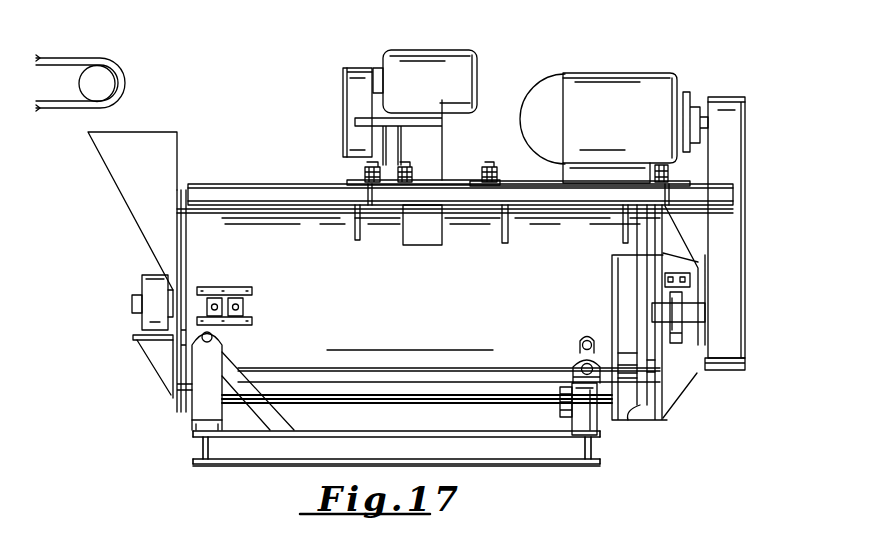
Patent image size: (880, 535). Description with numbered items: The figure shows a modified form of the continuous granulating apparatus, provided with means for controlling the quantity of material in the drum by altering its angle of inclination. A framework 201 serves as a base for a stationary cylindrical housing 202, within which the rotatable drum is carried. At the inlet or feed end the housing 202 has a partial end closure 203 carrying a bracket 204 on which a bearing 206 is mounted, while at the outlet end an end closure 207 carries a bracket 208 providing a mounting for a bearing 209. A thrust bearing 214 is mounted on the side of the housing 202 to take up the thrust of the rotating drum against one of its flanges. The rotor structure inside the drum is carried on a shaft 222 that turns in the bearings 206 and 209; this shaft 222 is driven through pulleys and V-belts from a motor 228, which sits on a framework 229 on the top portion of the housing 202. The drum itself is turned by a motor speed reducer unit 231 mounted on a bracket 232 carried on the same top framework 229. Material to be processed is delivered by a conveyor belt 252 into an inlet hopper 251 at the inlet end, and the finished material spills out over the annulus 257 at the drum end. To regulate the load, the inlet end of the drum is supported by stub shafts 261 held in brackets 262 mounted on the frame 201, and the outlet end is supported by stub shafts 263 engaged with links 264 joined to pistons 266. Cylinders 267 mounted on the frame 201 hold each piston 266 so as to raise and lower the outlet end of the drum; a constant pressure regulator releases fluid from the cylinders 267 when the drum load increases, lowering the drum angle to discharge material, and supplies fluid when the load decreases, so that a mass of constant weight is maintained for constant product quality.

The framework 201 is at (238, 464).
The stationary cylindrical housing 202 is at (389, 402).
The partial end closure 203 is at (172, 394).
The bracket 204 is at (149, 349).
The bearing 206 is at (142, 282).
The end closure 207 is at (669, 412).
The bracket 208 is at (683, 252).
The bearing 209 is at (676, 322).
The thrust bearing 214 is at (252, 306).
The shaft 222 is at (133, 303).
The motor 228 is at (641, 72).
The framework 229 is at (306, 180).
The motor speed reducer unit 231 is at (431, 45).
The bracket 232 is at (436, 163).
The inlet hopper 251 is at (150, 132).
The conveyor belt 252 is at (62, 58).
The annulus 257 is at (630, 407).
The stub shafts 261 is at (213, 336).
The brackets 262 is at (197, 413).
The stub shafts 263 is at (582, 340).
The links 264 is at (580, 352).
The pistons 266 is at (562, 381).
The cylinders 267 is at (573, 417).